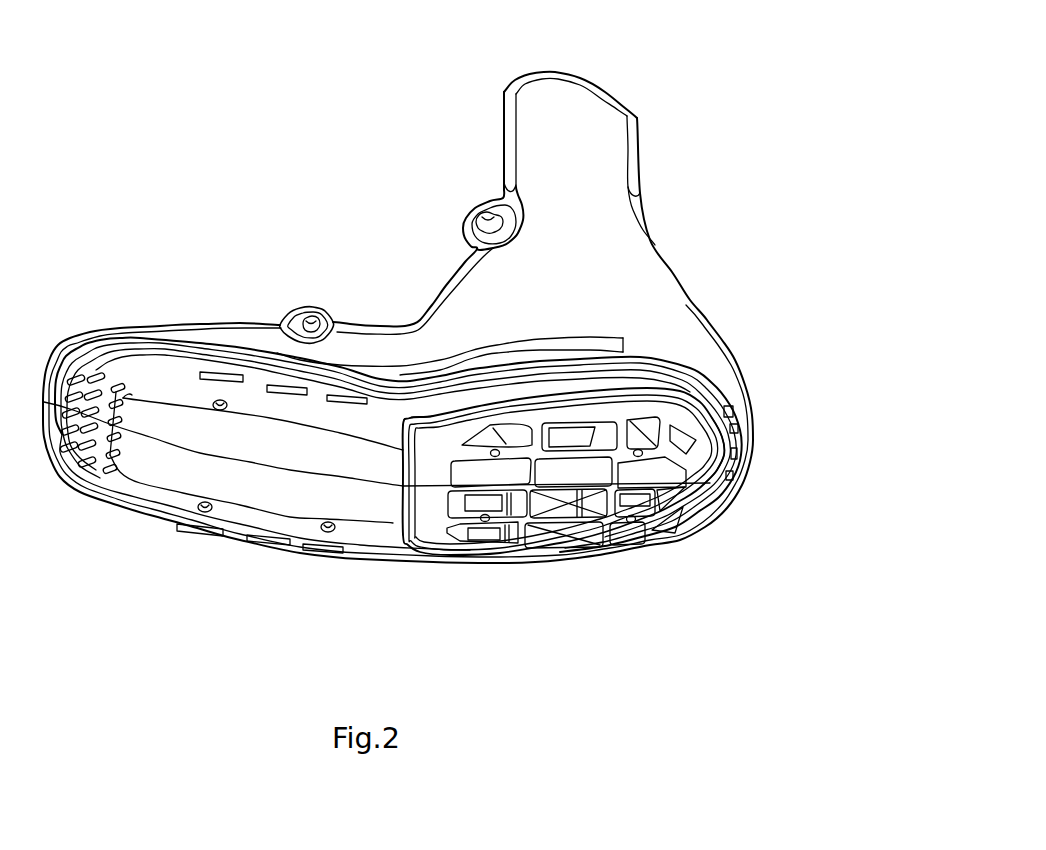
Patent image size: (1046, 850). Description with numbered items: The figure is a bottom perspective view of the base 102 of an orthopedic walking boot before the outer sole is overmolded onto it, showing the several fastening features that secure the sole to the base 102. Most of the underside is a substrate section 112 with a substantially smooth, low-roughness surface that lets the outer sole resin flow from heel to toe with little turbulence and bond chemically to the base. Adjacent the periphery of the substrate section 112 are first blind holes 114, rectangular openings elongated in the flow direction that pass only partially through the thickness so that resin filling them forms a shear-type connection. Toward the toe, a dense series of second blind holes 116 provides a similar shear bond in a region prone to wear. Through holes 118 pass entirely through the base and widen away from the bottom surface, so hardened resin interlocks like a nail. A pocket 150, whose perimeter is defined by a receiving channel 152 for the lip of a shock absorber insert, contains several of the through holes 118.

The base 102 is at (608, 165).
The substrate section 112 is at (242, 474).
The first blind holes 114 is at (279, 388).
The second blind holes 116 is at (74, 377).
The through holes 118 is at (213, 405).
The pocket 150 is at (697, 478).
The receiving channel 152 is at (718, 410).